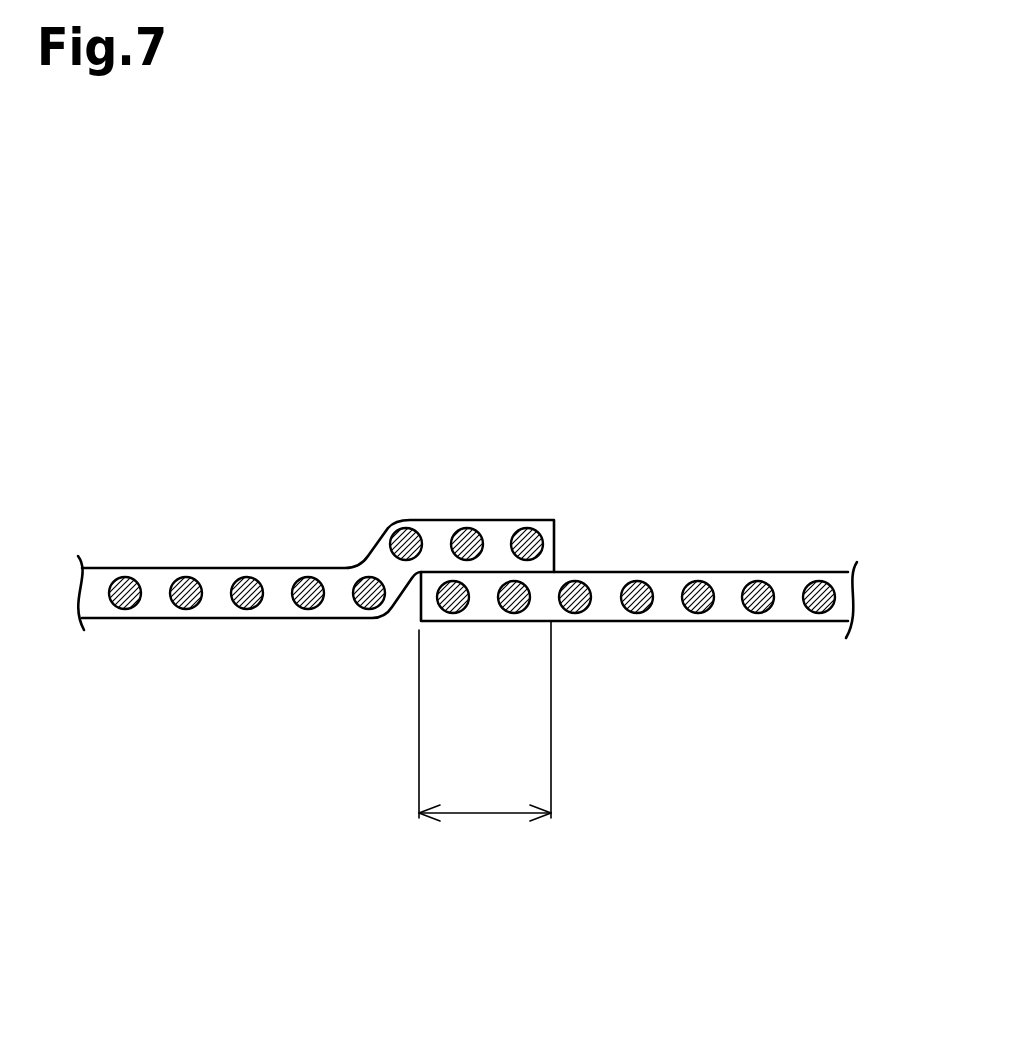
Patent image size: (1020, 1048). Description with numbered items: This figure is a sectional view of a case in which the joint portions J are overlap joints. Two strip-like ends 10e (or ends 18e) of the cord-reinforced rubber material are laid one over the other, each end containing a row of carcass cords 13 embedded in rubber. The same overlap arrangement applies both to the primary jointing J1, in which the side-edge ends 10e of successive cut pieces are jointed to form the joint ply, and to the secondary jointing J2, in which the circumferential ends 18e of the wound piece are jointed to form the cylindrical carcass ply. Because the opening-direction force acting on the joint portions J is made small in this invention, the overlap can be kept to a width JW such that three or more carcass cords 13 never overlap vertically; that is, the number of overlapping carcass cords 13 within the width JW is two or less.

The end 10e is at (467, 526).
The end 18e is at (433, 520).
The carcass cord 13 is at (465, 528).
The primary jointing J1 is at (661, 356).
The secondary jointing J2 is at (607, 450).
The joint portion J is at (485, 796).
The width JW is at (482, 813).